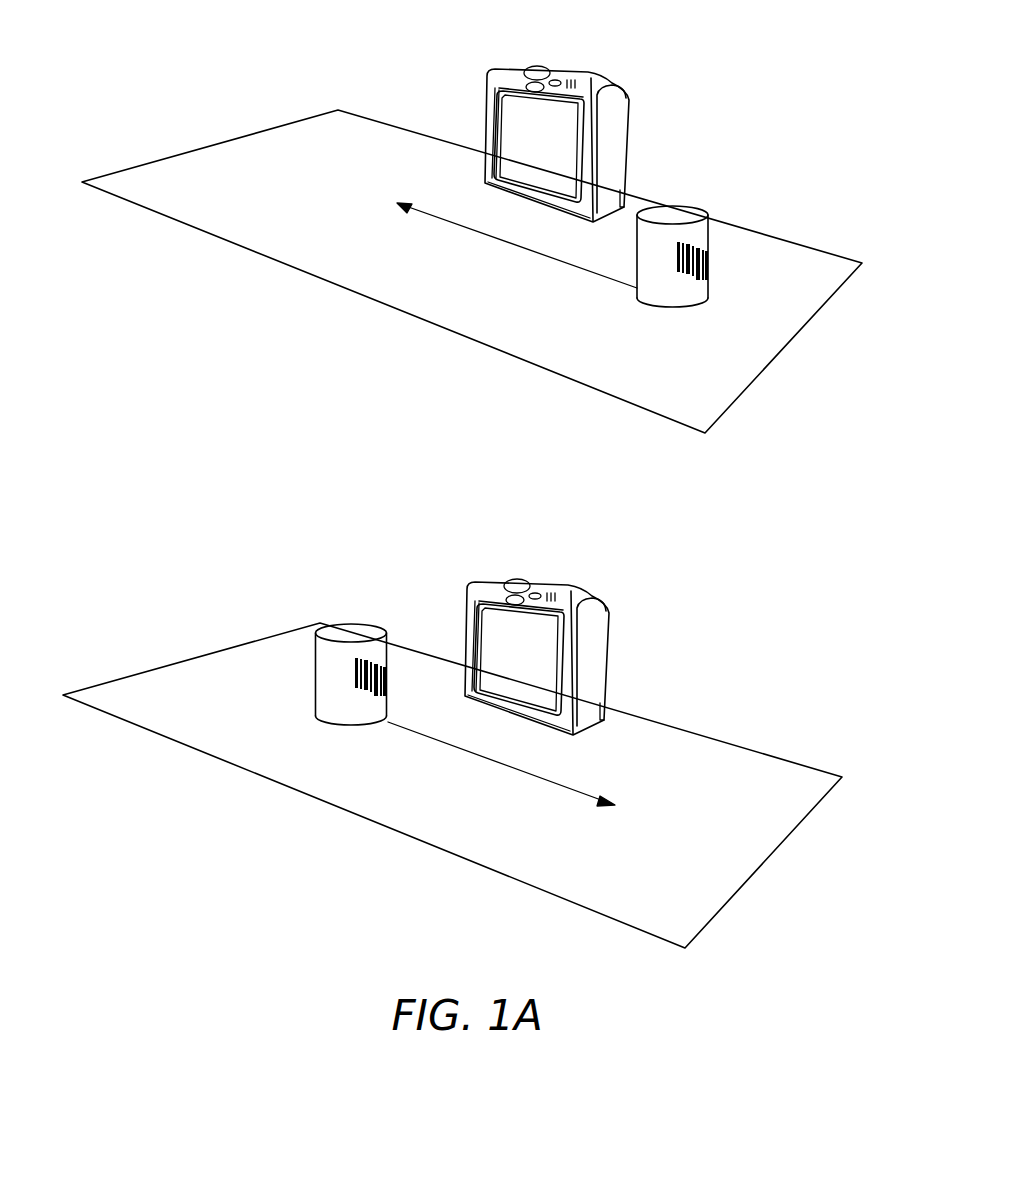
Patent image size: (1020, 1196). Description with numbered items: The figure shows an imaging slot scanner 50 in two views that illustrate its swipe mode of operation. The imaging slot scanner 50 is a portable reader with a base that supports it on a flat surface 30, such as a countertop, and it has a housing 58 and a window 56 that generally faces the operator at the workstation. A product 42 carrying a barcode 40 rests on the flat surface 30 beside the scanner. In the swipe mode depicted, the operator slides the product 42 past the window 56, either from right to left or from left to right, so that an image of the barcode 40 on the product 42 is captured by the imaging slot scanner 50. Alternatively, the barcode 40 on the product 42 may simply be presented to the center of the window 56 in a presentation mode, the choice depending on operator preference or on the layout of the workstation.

The flat surface 30 is at (313, 123).
The barcode 40 is at (710, 248).
The product 42 is at (703, 205).
The imaging slot scanner 50 is at (577, 379).
The window 56 is at (558, 137).
The housing 58 is at (630, 135).